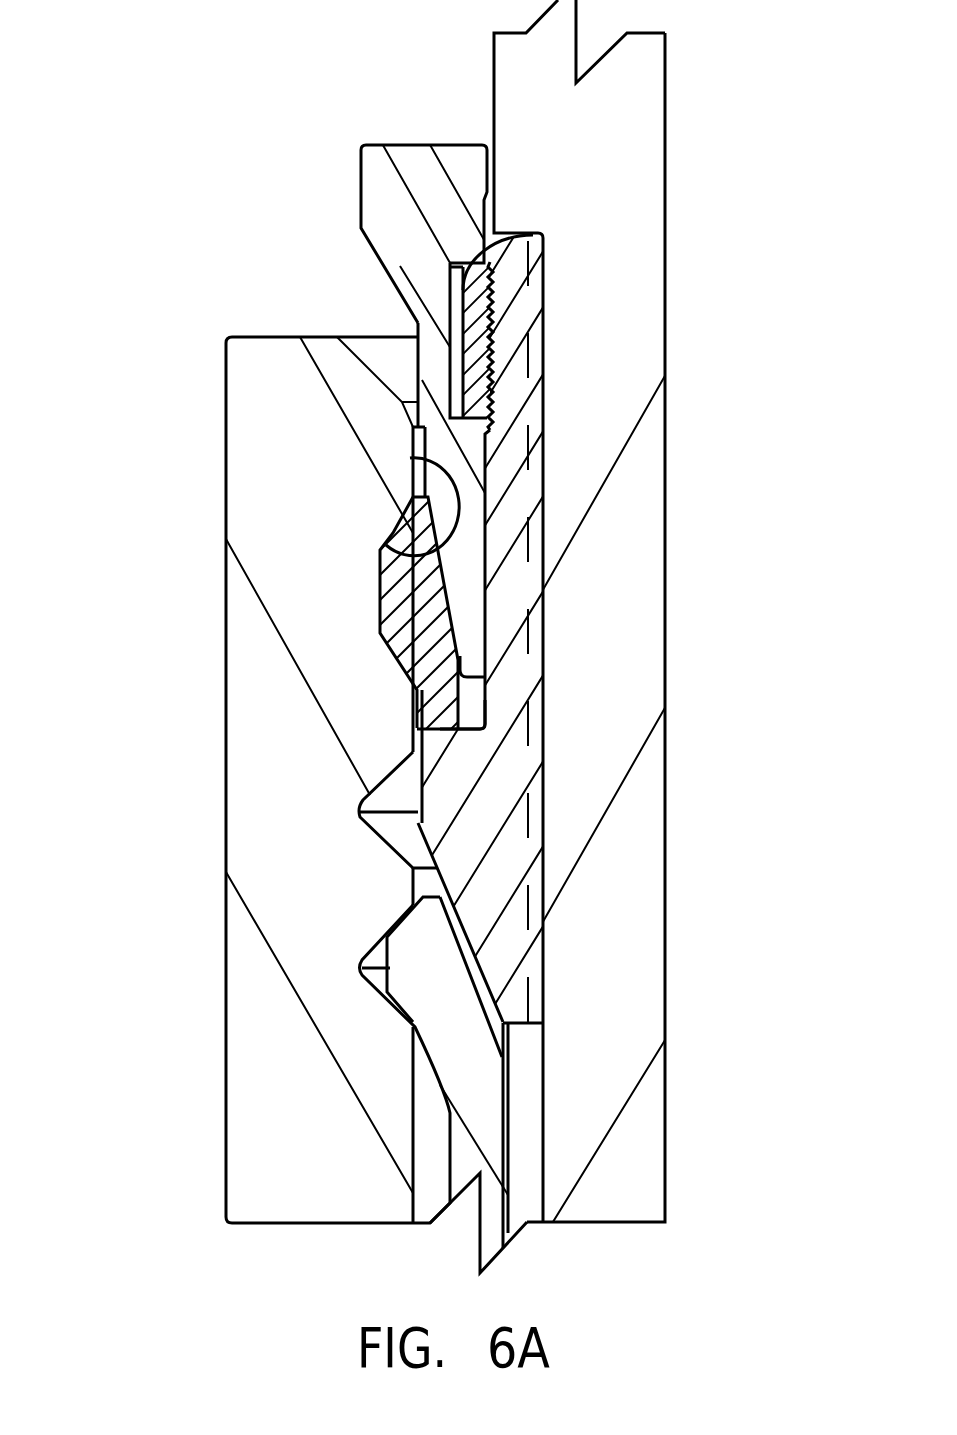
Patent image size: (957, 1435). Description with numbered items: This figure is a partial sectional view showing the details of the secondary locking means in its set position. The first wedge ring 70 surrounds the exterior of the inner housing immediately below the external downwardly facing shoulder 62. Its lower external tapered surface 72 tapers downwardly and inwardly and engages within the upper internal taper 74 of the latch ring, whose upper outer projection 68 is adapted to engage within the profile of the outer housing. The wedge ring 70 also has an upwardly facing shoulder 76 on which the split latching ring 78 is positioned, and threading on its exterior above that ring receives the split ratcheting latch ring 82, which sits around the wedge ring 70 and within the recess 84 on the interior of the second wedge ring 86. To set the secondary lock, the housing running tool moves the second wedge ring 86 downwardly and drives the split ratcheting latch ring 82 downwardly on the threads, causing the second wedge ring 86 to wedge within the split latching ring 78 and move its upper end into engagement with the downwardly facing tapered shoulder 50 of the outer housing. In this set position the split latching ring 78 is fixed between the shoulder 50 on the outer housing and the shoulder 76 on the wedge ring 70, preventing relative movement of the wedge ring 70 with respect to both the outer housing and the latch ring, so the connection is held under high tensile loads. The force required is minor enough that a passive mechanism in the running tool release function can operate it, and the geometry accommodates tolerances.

The downwardly facing tapered shoulder 50 is at (411, 459).
The external downwardly facing shoulder 62 is at (470, 291).
The upper outer projection 68 is at (390, 968).
The first wedge ring 70 is at (415, 806).
The lower external tapered surface 72 is at (483, 967).
The upper internal taper 74 is at (465, 928).
The upwardly facing shoulder 76 is at (484, 713).
The split latching ring 78 is at (380, 591).
The split ratcheting latch ring 82 is at (450, 313).
The recess 84 is at (425, 336).
The second wedge ring 86 is at (494, 118).